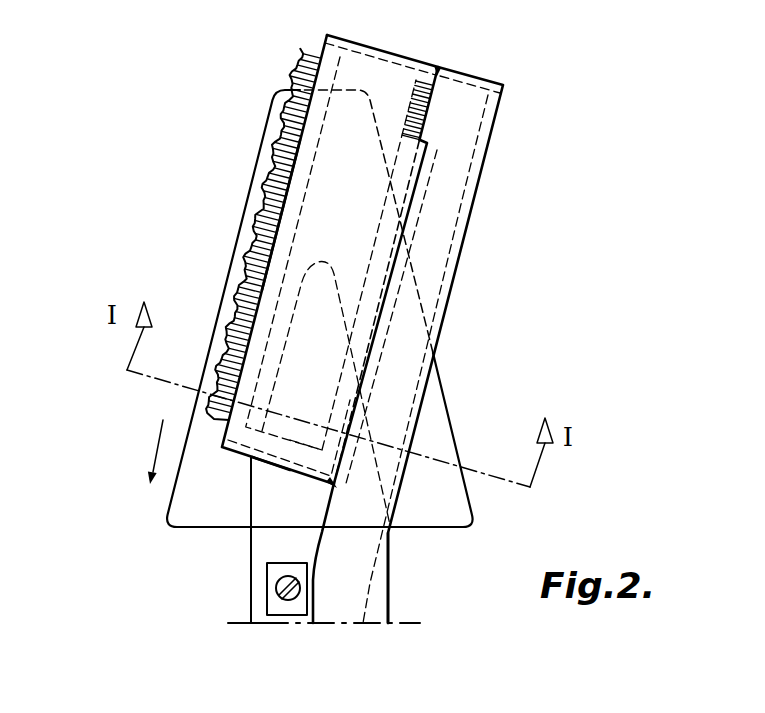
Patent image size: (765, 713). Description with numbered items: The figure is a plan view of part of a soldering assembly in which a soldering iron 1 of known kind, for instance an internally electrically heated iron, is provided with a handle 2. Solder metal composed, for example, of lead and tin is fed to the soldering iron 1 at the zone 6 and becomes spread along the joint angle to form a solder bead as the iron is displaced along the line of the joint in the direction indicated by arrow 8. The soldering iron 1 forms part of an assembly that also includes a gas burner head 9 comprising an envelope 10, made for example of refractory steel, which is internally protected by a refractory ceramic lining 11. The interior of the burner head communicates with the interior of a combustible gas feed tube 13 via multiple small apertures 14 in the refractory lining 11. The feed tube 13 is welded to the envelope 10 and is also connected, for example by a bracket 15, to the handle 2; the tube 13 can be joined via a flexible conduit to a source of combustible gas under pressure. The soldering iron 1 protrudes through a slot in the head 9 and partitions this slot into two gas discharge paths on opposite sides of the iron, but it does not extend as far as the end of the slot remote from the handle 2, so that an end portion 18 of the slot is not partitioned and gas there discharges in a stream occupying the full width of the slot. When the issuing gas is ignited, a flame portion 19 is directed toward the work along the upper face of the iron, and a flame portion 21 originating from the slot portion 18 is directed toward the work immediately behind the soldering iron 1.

The soldering iron 1 is at (193, 532).
The handle 2 is at (390, 593).
The zone 6 is at (216, 507).
The arrow 8 is at (163, 420).
The gas burner head 9 is at (322, 20).
The envelope 10 is at (269, 462).
The refractory ceramic lining 11 is at (306, 452).
The combustible gas feed tube 13 is at (440, 213).
The apertures 14 is at (427, 118).
The bracket 15 is at (280, 603).
The end portion of the slot 18 is at (330, 66).
The flame portion 19 is at (267, 216).
The flame portion 21 is at (300, 75).